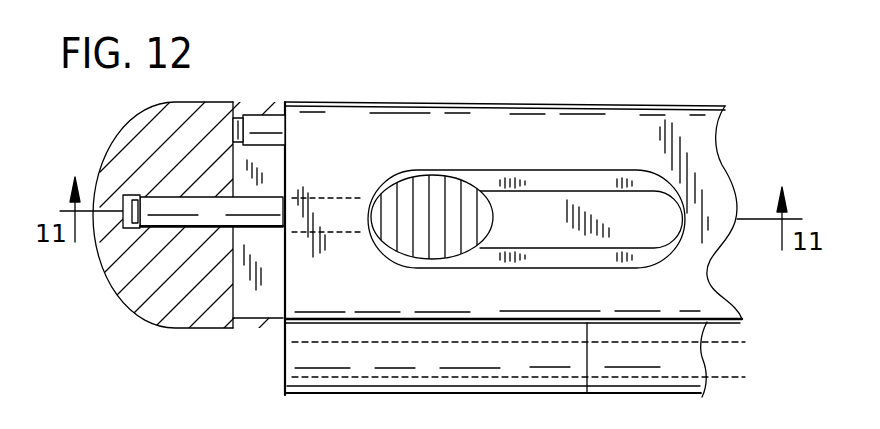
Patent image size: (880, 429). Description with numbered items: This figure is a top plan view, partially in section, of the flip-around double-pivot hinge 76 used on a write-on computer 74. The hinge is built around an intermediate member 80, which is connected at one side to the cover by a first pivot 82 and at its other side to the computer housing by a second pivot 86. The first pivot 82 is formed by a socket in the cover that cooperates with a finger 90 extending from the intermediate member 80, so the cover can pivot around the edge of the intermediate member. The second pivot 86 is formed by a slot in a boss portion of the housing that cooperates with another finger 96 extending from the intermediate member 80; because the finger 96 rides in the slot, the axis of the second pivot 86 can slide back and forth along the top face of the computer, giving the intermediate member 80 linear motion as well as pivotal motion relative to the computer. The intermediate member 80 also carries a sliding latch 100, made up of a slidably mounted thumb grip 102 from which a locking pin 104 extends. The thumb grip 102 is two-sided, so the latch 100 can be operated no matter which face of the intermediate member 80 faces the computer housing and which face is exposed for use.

The write-on computer 74 is at (707, 90).
The flip-around double-pivot hinge 76 is at (642, 105).
The intermediate member 80 is at (427, 102).
The first pivot 82 is at (282, 370).
The second pivot 86 is at (288, 133).
The finger 90 is at (407, 338).
The finger 96 is at (257, 148).
The sliding latch 100 is at (558, 165).
The thumb grip 102 is at (436, 193).
The locking pin 104 is at (245, 229).